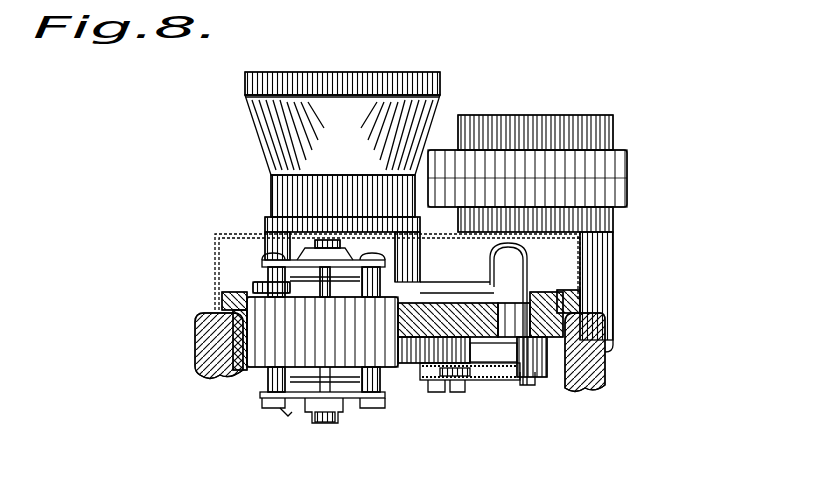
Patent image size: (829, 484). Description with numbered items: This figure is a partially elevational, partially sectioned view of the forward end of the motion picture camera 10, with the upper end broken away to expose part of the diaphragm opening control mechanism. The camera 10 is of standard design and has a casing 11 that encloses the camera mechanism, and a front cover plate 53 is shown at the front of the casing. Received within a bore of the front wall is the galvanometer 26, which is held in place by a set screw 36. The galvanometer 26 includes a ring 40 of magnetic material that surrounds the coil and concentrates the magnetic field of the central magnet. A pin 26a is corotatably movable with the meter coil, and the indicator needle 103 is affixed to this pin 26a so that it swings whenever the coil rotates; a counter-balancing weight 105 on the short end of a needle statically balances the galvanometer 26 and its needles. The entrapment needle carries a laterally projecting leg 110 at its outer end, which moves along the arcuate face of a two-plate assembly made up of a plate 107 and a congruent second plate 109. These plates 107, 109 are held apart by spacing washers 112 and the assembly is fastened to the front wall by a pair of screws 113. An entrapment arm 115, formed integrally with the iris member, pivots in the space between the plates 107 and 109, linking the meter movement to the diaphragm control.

The motion picture camera 10 is at (637, 270).
The casing 11 is at (198, 356).
The galvanometer 26 is at (263, 412).
The pin 26a is at (325, 297).
The set screw 36 is at (229, 292).
The ring 40 is at (306, 347).
The front cover plate 53 is at (217, 233).
The indicator needle 103 is at (332, 289).
The counter-balancing weight 105 is at (263, 292).
The plate 107 is at (485, 386).
The second plate 109 is at (505, 361).
The laterally projecting leg 110 is at (560, 260).
The spacing washers 112 is at (422, 392).
The screws 113 is at (452, 386).
The entrapment arm 115 is at (507, 386).